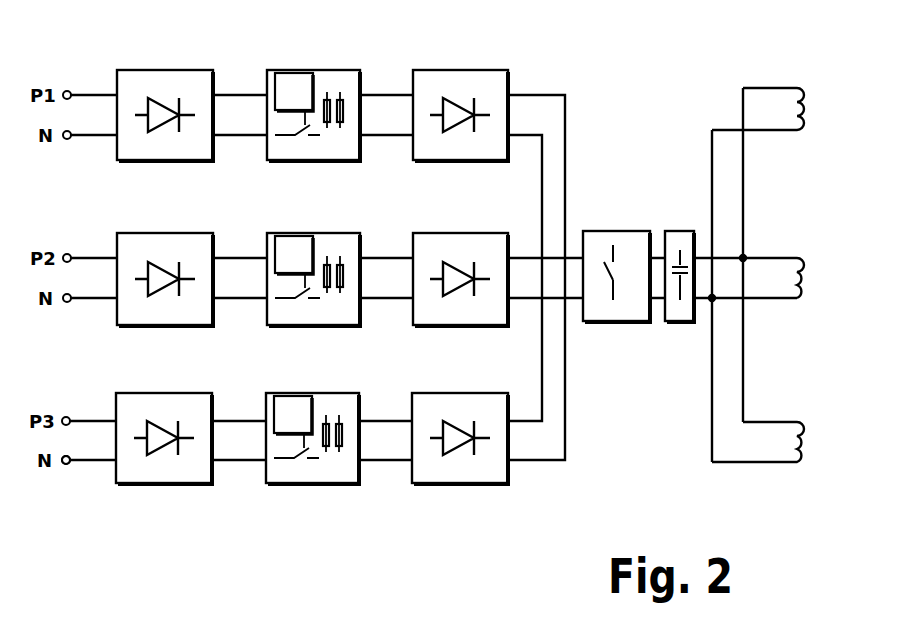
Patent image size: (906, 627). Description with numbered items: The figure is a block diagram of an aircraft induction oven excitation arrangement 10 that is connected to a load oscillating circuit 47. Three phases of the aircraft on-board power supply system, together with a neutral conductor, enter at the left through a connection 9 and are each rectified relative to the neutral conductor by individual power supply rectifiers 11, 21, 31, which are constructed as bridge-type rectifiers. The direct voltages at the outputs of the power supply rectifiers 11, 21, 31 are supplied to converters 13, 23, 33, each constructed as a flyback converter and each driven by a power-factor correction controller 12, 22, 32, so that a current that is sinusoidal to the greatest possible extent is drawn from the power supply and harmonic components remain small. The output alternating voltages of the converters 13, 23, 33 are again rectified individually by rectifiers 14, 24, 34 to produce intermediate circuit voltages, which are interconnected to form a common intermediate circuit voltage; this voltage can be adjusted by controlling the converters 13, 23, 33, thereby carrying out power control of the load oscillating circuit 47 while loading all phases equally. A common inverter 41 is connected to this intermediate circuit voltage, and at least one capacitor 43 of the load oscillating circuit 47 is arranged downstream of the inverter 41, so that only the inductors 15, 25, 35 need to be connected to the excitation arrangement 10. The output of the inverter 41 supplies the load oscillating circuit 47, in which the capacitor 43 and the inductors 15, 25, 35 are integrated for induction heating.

The connection 9 is at (65, 468).
The aircraft induction oven excitation arrangement 10 is at (453, 510).
The power supply rectifier 11 is at (152, 80).
The power-factor correction controller 12 is at (290, 82).
The converter 13 is at (340, 70).
The rectifier 14 is at (448, 82).
The inductor 15 is at (797, 92).
The power supply rectifier 21 is at (152, 245).
The power-factor correction controller 22 is at (290, 245).
The converter 23 is at (340, 233).
The rectifier 24 is at (448, 245).
The inductor 25 is at (797, 262).
The power supply rectifier 31 is at (152, 408).
The power-factor correction controller 32 is at (289, 406).
The converter 33 is at (339, 393).
The rectifier 34 is at (447, 406).
The inductor 35 is at (797, 426).
The common inverter 41 is at (605, 243).
The capacitor 43 is at (676, 322).
The load oscillating circuit 47 is at (683, 91).